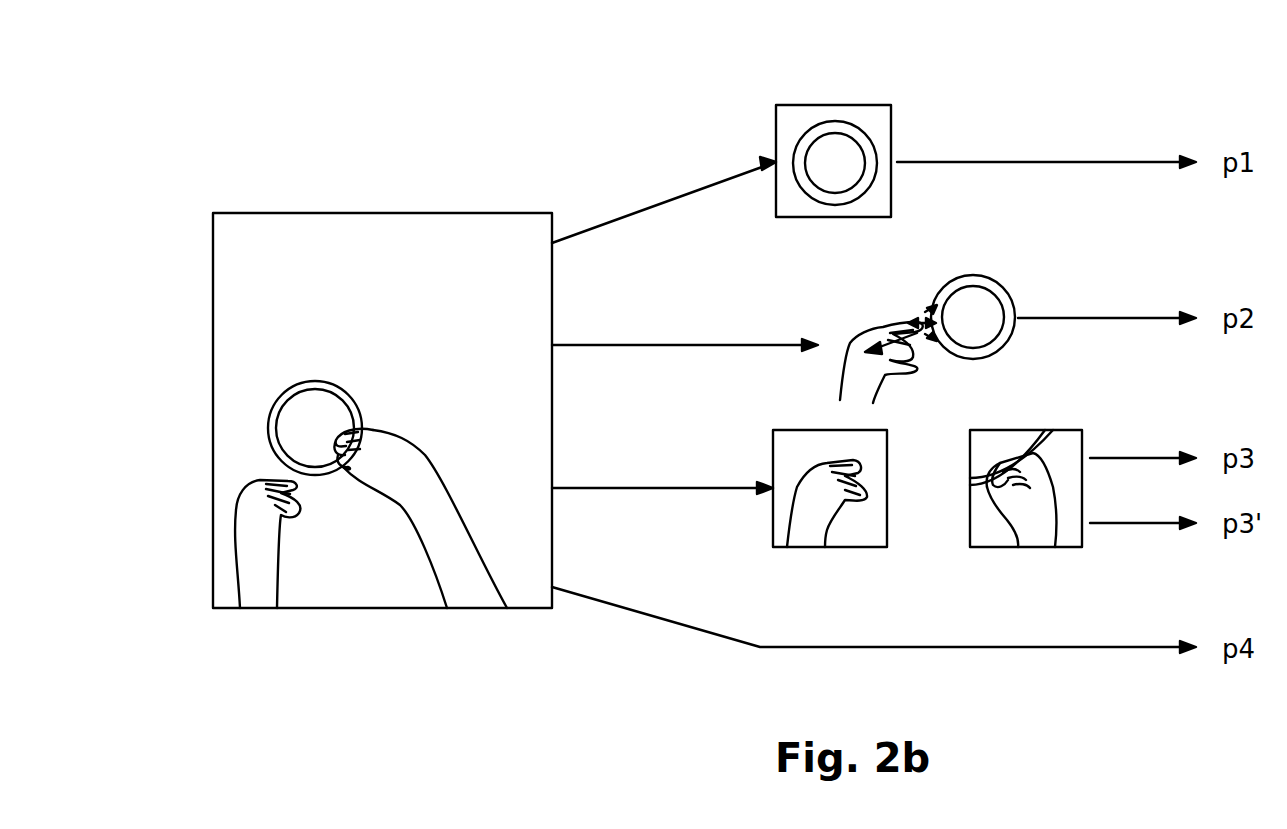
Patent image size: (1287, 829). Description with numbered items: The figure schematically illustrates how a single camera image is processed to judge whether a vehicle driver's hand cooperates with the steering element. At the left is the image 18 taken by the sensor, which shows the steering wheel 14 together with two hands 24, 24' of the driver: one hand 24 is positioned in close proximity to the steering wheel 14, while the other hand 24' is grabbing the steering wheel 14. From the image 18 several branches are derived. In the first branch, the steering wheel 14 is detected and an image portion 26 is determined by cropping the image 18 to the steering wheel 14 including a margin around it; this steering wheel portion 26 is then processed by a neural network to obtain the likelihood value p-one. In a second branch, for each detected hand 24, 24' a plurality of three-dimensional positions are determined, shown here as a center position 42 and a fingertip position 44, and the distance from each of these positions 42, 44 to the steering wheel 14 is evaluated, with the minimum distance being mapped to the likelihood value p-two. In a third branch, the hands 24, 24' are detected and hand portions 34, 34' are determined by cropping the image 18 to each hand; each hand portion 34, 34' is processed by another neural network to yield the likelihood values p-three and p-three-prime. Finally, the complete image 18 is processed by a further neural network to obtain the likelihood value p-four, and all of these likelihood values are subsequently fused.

The steering wheel 14 is at (330, 382).
The image 18 is at (312, 608).
The hand 24 is at (535, 440).
The hand 24' is at (695, 479).
The steering wheel portion 26 is at (868, 105).
The hand portion 34 is at (844, 524).
The hand portion 34' is at (1053, 522).
The center position 42 is at (873, 333).
The fingertip position 44 is at (897, 317).